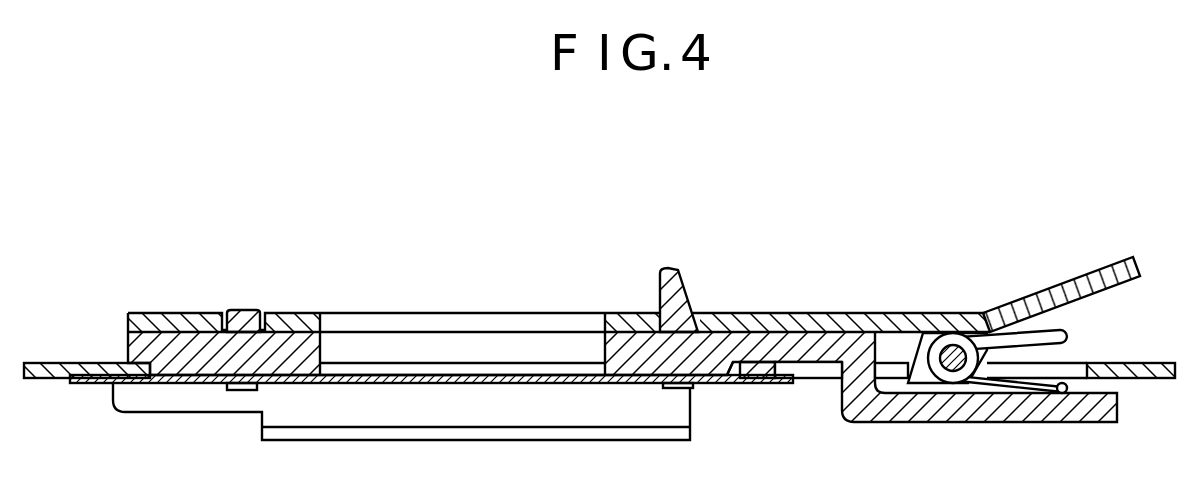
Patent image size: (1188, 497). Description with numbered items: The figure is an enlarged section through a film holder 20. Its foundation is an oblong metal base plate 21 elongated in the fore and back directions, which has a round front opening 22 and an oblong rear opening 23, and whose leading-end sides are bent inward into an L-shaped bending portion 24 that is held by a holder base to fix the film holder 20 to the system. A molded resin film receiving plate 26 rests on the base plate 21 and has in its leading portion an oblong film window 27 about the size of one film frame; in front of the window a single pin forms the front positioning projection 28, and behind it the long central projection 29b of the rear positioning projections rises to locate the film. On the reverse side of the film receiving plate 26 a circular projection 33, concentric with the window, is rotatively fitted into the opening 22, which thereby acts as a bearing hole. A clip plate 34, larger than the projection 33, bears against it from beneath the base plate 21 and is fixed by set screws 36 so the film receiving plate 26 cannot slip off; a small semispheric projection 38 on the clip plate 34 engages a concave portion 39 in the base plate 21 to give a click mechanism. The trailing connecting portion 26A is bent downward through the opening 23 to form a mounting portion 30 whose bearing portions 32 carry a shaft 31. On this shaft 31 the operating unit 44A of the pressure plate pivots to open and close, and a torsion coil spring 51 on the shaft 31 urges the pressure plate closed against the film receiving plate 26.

The film holder 20 is at (546, 267).
The base plate 21 is at (1137, 362).
The opening 22 is at (727, 373).
The opening 23 is at (1083, 380).
The bending portion 24 is at (662, 430).
The film receiving plate 26 is at (733, 328).
The connecting portion 26A is at (857, 404).
The film window 27 is at (340, 331).
The front positioning projection 28 is at (242, 317).
The central projection 29b is at (673, 277).
The mounting portion 30 is at (998, 407).
The shaft 31 is at (953, 345).
The bearing portion 32 is at (927, 384).
The circular projection 33 is at (707, 363).
The clip plate 34 is at (773, 382).
The set screw 36 is at (238, 391).
The semispheric projection 38 is at (807, 328).
The concave portion 39 is at (846, 293).
The operating unit 44A is at (1090, 285).
The torsion coil spring 51 is at (1043, 332).